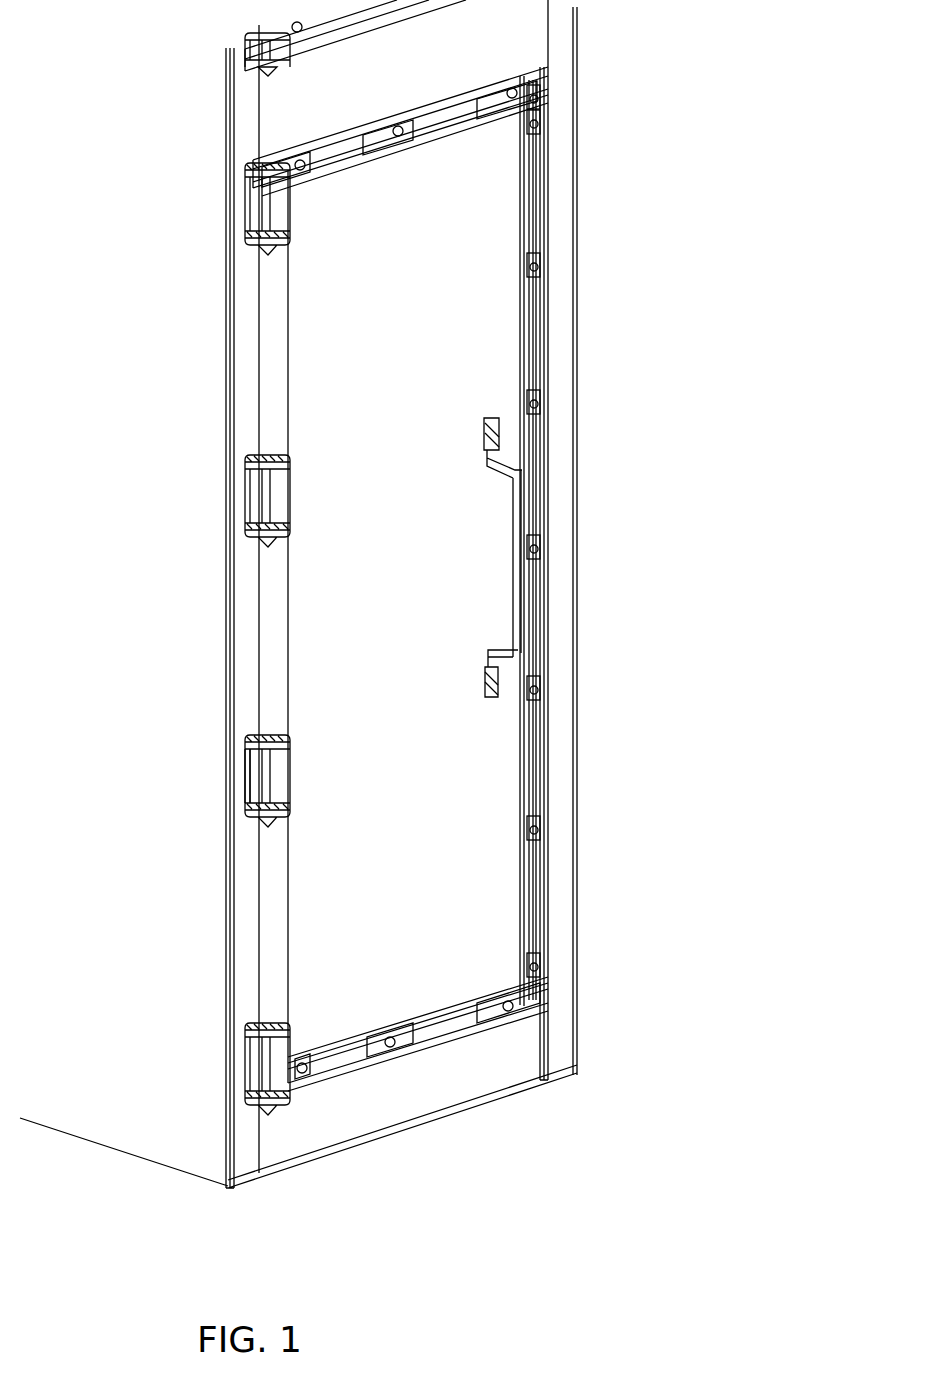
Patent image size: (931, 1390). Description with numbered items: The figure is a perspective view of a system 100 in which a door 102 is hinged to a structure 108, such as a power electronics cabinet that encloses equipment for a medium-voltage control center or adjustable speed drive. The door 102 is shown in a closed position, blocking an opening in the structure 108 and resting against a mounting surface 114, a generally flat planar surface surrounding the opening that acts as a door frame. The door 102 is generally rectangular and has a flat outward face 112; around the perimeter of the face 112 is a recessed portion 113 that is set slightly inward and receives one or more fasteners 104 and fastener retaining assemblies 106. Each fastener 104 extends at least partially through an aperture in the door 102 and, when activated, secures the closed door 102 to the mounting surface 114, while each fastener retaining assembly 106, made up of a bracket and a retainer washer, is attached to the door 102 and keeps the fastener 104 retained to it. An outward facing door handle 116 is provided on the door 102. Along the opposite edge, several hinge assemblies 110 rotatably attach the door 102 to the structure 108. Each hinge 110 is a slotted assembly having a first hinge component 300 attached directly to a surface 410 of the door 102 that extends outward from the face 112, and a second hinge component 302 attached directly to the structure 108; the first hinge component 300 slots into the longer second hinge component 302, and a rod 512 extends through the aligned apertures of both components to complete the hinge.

The system 100 is at (658, 98).
The door 102 is at (492, 352).
The fastener 104 is at (538, 835).
The fastener retaining assembly 106 is at (535, 820).
The structure 108 is at (182, 683).
The hinge 110 is at (237, 790).
The face 112 is at (315, 323).
The recessed portion 113 is at (527, 918).
The mounting surface 114 is at (238, 415).
The door handle 116 is at (520, 600).
The first hinge component 300 is at (282, 785).
The second hinge component 302 is at (255, 760).
The surface 410 is at (270, 967).
The rod 512 is at (267, 793).